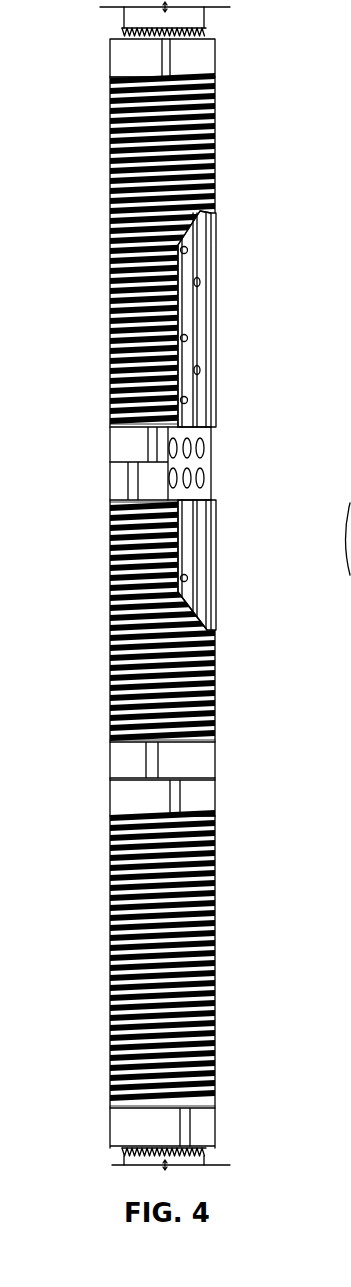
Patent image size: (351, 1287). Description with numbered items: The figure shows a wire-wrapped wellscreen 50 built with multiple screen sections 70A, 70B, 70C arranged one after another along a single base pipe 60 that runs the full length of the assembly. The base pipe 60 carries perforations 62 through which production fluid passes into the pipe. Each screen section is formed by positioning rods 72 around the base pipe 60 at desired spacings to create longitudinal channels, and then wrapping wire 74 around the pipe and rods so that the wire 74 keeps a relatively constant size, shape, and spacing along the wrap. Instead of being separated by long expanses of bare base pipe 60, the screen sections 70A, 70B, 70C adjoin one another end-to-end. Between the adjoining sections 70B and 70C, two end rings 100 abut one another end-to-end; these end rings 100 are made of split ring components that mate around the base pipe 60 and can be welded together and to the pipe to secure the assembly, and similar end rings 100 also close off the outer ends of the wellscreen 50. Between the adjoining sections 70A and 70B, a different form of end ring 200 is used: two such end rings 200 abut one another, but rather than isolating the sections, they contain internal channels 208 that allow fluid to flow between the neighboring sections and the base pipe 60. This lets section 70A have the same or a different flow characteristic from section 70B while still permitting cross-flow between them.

The wellscreen 50 is at (233, 57).
The base pipe 60 is at (122, 26).
The perforations 62 is at (210, 334).
The screen section 70A is at (110, 228).
The screen section 70B is at (110, 646).
The screen section 70C is at (110, 964).
The rods 72 is at (207, 256).
The wire 74 is at (215, 128).
The end rings 100 is at (110, 58).
The end ring 200 is at (110, 446).
The internal channels 208 is at (211, 456).